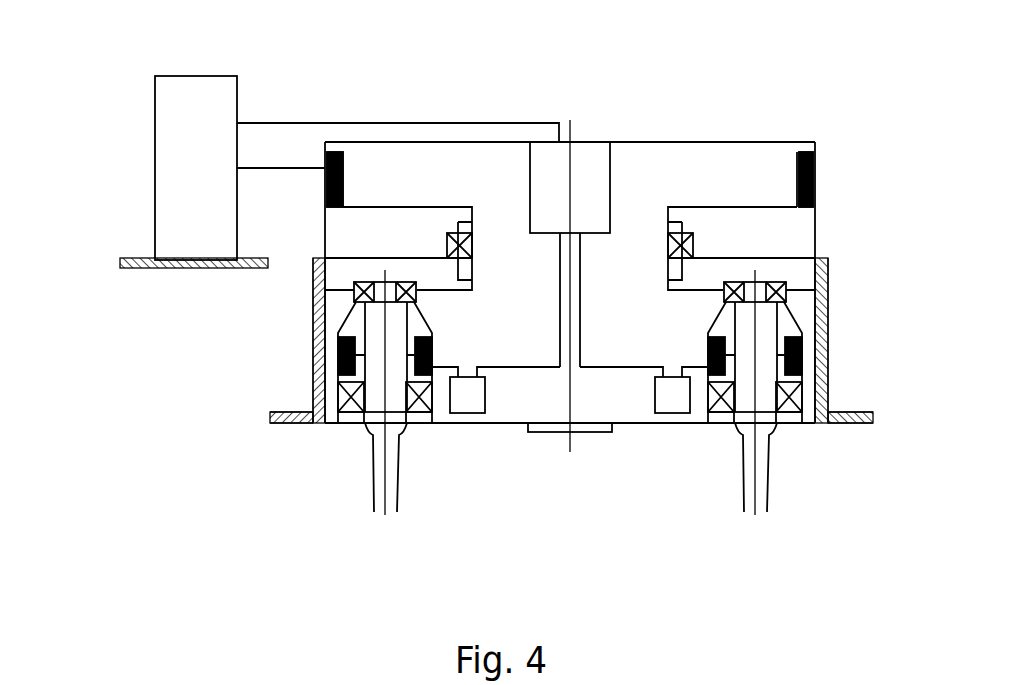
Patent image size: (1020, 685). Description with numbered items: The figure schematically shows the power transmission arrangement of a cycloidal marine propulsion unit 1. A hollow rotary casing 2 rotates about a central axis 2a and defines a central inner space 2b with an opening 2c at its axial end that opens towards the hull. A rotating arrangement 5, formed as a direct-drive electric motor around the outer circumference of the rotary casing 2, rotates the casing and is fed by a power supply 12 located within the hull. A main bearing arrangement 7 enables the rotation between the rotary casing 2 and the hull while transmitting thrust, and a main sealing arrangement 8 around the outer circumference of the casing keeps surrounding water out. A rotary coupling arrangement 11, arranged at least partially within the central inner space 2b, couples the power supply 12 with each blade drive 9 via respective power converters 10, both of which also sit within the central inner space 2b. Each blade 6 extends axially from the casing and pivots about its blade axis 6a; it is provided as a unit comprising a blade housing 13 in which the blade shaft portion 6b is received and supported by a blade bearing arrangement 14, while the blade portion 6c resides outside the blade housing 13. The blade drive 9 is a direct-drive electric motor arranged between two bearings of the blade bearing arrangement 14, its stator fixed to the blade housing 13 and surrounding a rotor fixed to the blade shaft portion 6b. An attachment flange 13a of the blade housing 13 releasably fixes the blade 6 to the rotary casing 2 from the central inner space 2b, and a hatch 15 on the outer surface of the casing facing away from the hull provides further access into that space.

The cycloidal marine propulsion unit 1 is at (126, 444).
The rotary casing 2 is at (637, 423).
The central axis 2a is at (570, 120).
The central inner space 2b is at (523, 412).
The opening 2c is at (651, 156).
The rotating arrangement 5 is at (818, 166).
The blade 6 is at (350, 455).
The blade axis 6a is at (755, 515).
The blade shaft portion 6b is at (363, 325).
The blade portion 6c is at (747, 497).
The main bearing arrangement 7 is at (695, 240).
The main sealing arrangement 8 is at (686, 269).
The blade drive 9 is at (803, 350).
The power converter 10 is at (468, 413).
The rotary coupling arrangement 11 is at (588, 153).
The power supply 12 is at (213, 76).
The blade housing 13 is at (804, 318).
The attachment flange 13a is at (791, 293).
The blade bearing arrangement 14 is at (338, 397).
The hatch 15 is at (597, 432).